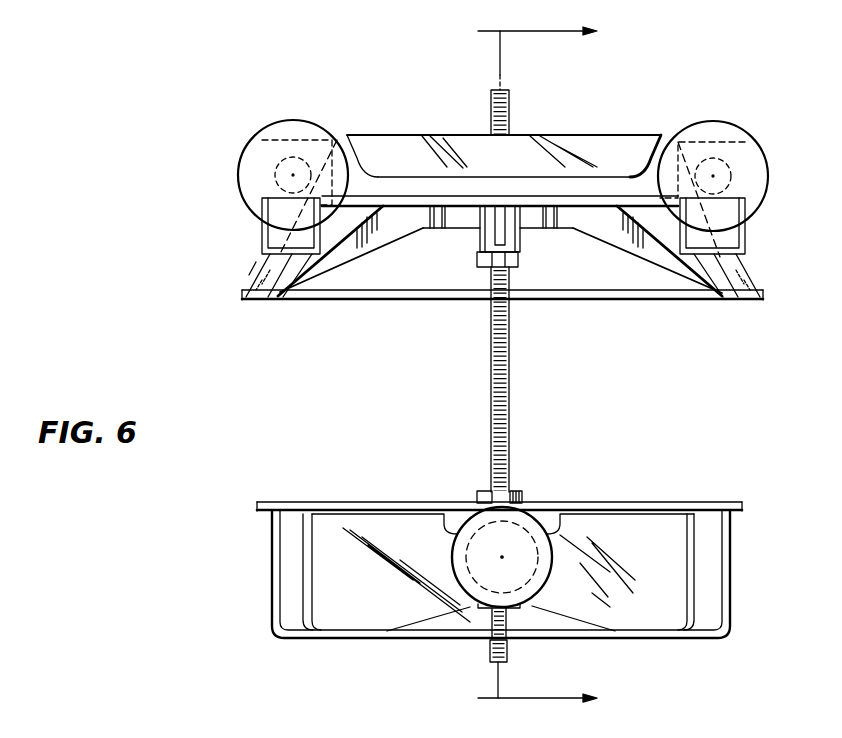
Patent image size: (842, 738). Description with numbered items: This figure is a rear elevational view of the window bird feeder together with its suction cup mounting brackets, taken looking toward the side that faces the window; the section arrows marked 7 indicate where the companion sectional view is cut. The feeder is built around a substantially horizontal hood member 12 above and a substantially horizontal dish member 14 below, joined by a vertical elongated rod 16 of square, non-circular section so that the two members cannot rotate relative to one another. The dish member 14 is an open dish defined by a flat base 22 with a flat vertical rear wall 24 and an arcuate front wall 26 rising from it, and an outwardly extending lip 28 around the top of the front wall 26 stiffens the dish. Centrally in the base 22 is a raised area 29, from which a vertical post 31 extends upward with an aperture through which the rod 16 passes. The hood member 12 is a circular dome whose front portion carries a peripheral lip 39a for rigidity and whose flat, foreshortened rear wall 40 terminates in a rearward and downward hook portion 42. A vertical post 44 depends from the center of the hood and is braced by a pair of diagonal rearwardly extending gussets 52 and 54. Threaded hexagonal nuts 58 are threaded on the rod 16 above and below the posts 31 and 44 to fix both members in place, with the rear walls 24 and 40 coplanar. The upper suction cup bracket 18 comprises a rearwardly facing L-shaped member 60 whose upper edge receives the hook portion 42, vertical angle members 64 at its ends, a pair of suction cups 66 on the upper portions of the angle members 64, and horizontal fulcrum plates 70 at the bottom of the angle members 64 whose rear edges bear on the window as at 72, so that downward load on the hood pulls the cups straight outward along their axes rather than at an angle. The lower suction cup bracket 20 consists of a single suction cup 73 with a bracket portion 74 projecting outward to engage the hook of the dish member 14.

The section line 7- 7 is at (528, 366).
The hood member 12 is at (620, 270).
The dish member 14 is at (722, 582).
The elongated rod 16 is at (510, 108).
The upper suction cup bracket 18 is at (645, 176).
The lower suction cup bracket 20 is at (537, 518).
The base 22 is at (667, 638).
The rear wall 24 is at (652, 537).
The front wall 26 is at (732, 545).
The lip 28 is at (743, 508).
The raised area 29 is at (557, 612).
The post 31 is at (315, 502).
The peripheral lip 39a is at (242, 298).
The rear wall 40 is at (275, 277).
The hook portion 42 is at (600, 157).
The post 44 is at (480, 240).
The gusset 52 is at (607, 223).
The gusset 54 is at (383, 228).
The threaded hexagonal nuts 58 is at (520, 272).
The L-shaped member 60 is at (358, 172).
The angle members 64 is at (277, 237).
The suction cups 66 is at (283, 133).
The plates 70 is at (300, 272).
The bottom plates 72 is at (273, 265).
The suction cup 73 is at (458, 547).
The bracket portion 74 is at (473, 515).